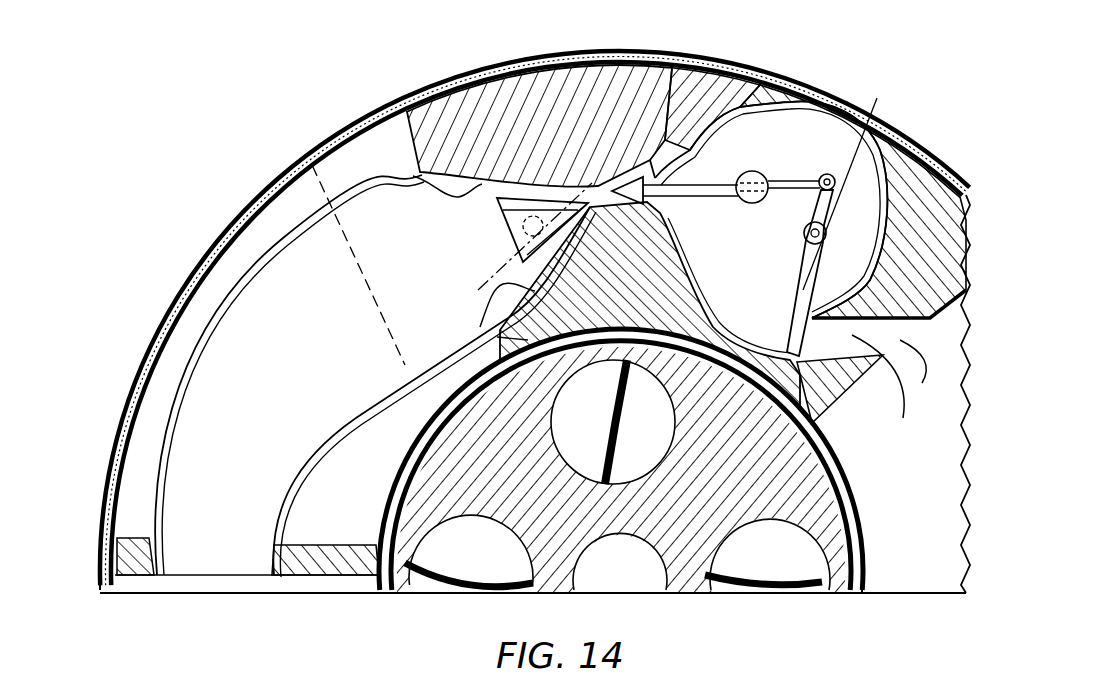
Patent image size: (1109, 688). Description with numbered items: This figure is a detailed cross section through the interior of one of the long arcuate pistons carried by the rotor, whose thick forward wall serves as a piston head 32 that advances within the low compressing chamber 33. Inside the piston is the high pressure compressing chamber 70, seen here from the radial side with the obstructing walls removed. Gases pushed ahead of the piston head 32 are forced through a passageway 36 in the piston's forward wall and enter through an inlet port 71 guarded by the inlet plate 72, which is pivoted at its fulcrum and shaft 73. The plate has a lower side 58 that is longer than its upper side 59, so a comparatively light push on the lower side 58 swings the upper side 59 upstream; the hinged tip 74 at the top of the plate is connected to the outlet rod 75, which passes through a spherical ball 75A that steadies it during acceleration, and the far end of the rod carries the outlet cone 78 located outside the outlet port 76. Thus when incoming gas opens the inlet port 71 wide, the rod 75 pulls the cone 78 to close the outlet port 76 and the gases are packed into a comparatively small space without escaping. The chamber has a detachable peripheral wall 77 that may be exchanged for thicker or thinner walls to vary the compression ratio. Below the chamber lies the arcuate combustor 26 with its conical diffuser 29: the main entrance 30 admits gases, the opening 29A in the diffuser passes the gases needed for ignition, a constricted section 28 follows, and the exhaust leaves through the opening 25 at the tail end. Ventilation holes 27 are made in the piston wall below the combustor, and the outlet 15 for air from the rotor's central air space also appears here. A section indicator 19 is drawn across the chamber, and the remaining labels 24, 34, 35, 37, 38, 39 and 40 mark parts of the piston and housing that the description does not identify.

The outlet 15 is at (314, 138).
The section line 19- 19 is at (860, 86).
The passage 24 is at (469, 551).
The exhaust opening 25 is at (200, 630).
The combustor 26 is at (289, 375).
The ventilation holes 27 is at (392, 516).
The constricted section of the combustor 28 is at (455, 197).
The conical diffuser 29 is at (500, 222).
The opening in the diffuser 29A is at (512, 241).
The main entrance to the combustor 30 is at (586, 165).
The piston head 32 is at (950, 312).
The low compressing chamber 33 is at (934, 394).
The passage 34 is at (686, 560).
The passage 35 is at (620, 561).
The passageway 36 is at (888, 386).
The passage 37 is at (618, 418).
The outer shell 38 is at (208, 247).
The cylindrical wall 39 is at (853, 482).
The wall end 40 is at (107, 592).
The lower side of the plate 58 is at (793, 336).
The upper side of the plate 59 is at (802, 192).
The high pressure compressing chamber 70 is at (771, 209).
The inlet port 71 is at (842, 405).
The inlet plate 72 is at (798, 285).
The fulcrum and shaft 73 is at (928, 150).
The hinged tip 74 is at (833, 173).
The outlet rod 75 is at (755, 170).
The spherical ball 75A is at (762, 172).
The outlet port 76 is at (765, 100).
The detachable peripheral wall 77 is at (705, 98).
The outlet cone 78 is at (630, 128).